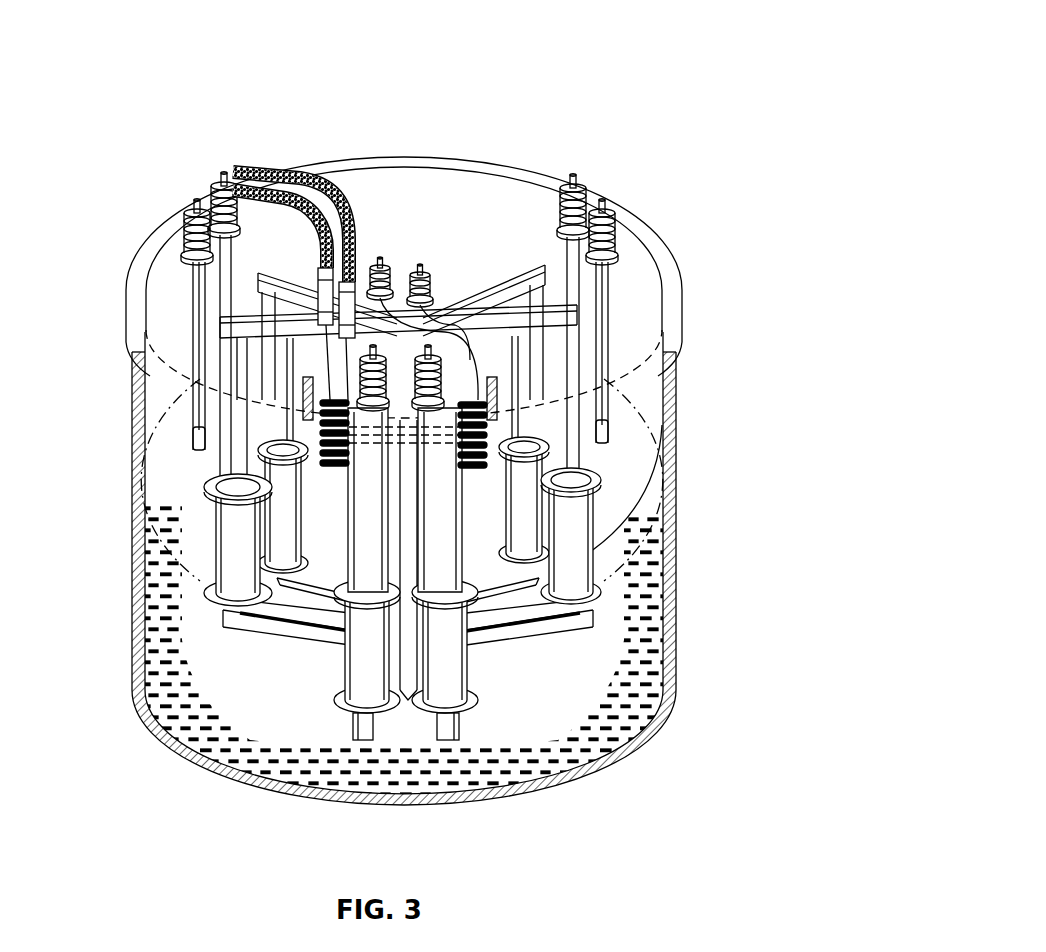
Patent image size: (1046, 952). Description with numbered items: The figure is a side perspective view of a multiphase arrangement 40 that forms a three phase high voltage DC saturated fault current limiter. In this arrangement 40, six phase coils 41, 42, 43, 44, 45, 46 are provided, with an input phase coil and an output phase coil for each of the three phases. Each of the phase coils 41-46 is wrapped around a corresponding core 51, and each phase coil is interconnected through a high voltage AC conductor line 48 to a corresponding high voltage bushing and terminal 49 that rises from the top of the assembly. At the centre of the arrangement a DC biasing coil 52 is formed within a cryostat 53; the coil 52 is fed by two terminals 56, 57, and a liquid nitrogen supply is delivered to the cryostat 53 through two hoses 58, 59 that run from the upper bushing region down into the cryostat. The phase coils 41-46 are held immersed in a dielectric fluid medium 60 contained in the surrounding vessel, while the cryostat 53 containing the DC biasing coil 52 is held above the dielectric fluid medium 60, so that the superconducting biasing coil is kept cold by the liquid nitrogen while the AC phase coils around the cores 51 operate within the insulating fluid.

The multiphase arrangement 40 is at (656, 136).
The phase coil 41 is at (212, 528).
The phase coil 42 is at (278, 514).
The phase coil 43 is at (360, 657).
The phase coil 44 is at (466, 665).
The phase coil 45 is at (602, 553).
The phase coil 46 is at (548, 507).
The high voltage AC conductor line 48 is at (195, 283).
The high voltage bushing and terminal 49 is at (190, 240).
The core 51 is at (233, 440).
The DC biasing coil 52 is at (450, 395).
The cryostat 53 is at (488, 392).
The terminal 56 is at (382, 262).
The terminal 57 is at (424, 272).
The hose 58 is at (287, 168).
The hose 59 is at (340, 203).
The dielectric fluid medium 60 is at (650, 590).